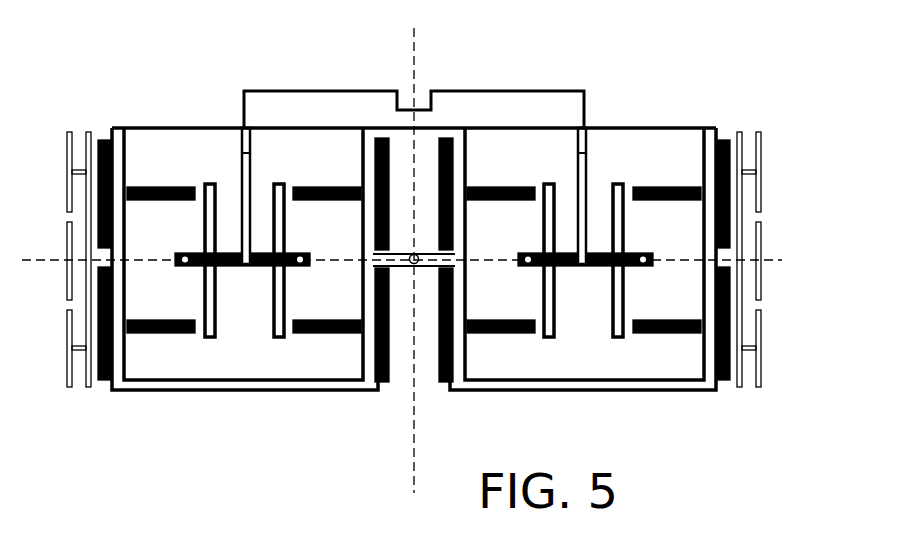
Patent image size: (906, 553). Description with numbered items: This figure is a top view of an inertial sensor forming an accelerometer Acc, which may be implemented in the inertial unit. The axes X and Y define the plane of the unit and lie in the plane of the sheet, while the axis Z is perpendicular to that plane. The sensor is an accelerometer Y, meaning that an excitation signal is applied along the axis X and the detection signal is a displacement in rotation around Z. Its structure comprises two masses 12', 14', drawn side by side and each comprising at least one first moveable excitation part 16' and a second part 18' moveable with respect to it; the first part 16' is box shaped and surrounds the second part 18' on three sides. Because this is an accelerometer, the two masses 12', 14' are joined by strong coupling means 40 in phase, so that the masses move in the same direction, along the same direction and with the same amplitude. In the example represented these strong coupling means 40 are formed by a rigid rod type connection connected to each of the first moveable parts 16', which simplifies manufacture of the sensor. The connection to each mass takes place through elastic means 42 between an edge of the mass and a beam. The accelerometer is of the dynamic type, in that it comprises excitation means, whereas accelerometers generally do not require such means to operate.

The mass 12' is at (228, 223).
The mass 14' is at (600, 219).
The first moveable excitation part 16' is at (414, 284).
The second part 18' is at (414, 284).
The strong coupling means in phase 40 is at (403, 300).
The elastic means 42 is at (413, 258).
The axis X is at (798, 258).
The axis Y is at (416, 38).
The axis Z is at (416, 256).
The accelerometer Acc is at (550, 58).